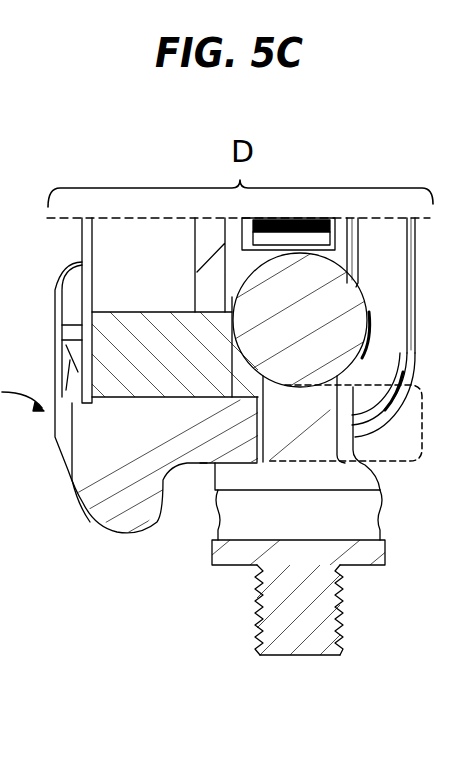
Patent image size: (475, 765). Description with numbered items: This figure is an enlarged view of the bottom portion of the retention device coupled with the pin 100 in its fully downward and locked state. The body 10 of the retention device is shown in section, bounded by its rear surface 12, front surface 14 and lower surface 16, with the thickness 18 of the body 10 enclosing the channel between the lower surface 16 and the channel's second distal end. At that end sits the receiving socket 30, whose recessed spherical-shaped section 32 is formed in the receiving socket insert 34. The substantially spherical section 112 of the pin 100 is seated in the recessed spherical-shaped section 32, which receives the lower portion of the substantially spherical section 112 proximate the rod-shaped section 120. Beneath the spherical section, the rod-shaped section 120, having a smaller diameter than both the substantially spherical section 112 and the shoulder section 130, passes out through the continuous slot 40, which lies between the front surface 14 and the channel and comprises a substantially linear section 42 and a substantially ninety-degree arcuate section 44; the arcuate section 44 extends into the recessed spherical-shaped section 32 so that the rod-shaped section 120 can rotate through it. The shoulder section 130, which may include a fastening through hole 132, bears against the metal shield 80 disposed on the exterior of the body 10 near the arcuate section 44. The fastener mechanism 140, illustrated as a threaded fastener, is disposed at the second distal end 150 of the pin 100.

The body 10 is at (72, 478).
The rear surface 12 is at (57, 438).
The front surface 14 is at (418, 233).
The lower surface 16 is at (207, 463).
The thickness 18 is at (428, 429).
The receiving socket 30 is at (240, 355).
The recessed spherical-shaped section 32 is at (236, 348).
The receiving socket insert 34 is at (118, 363).
The continuous slot 40 is at (392, 268).
The substantially linear section 42 is at (392, 294).
The substantially 90-degree arcuate section 44 is at (383, 376).
The metal shield 80 is at (405, 373).
The pin 100 is at (277, 572).
The substantially spherical section 112 is at (345, 325).
The rod-shaped section 120 is at (322, 438).
The shoulder section 130 is at (383, 480).
The fastening through hole 132 is at (310, 515).
The fastener mechanism 140 is at (310, 603).
The second distal end 150 is at (300, 660).